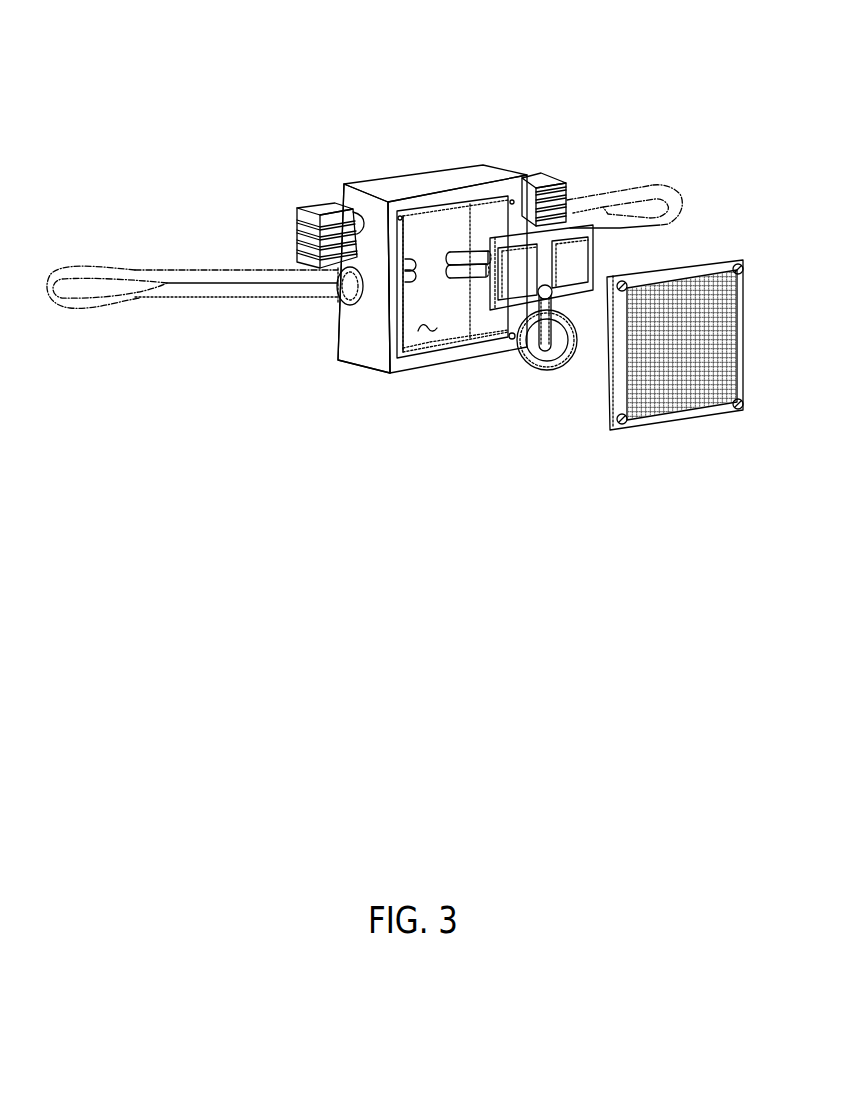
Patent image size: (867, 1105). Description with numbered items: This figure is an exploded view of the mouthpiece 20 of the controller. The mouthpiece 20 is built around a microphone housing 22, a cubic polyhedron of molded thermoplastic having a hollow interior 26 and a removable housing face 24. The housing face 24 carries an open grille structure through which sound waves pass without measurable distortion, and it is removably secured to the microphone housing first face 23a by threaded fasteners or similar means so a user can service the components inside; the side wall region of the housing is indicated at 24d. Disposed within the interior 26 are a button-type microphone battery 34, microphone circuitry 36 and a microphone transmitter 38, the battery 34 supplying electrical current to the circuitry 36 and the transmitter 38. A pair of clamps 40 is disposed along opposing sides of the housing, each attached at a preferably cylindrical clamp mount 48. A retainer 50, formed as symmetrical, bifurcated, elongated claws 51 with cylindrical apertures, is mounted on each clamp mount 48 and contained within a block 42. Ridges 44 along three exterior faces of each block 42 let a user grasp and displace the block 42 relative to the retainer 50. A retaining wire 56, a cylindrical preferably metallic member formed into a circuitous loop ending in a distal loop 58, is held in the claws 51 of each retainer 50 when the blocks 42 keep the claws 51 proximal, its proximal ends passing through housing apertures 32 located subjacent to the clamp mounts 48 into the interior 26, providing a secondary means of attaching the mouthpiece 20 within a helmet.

The mouthpiece 20 is at (183, 89).
The microphone housing 22 is at (427, 182).
The microphone housing first face 23a is at (488, 197).
The housing face 24 is at (672, 415).
The side wall of housing 24d is at (373, 332).
The interior 26 is at (427, 330).
The housing apertures 32 is at (338, 302).
The microphone battery 34 is at (547, 363).
The microphone circuitry 36 is at (590, 260).
The microphone transmitter 38 is at (518, 290).
The clamps 40 is at (242, 199).
The block 42 is at (300, 206).
The ridges 44 is at (297, 240).
The clamp mounts 48 is at (357, 212).
The retainer 50 is at (297, 304).
The claws 51 is at (330, 297).
The retaining wire 56 is at (200, 272).
The distal loop 58 is at (75, 272).